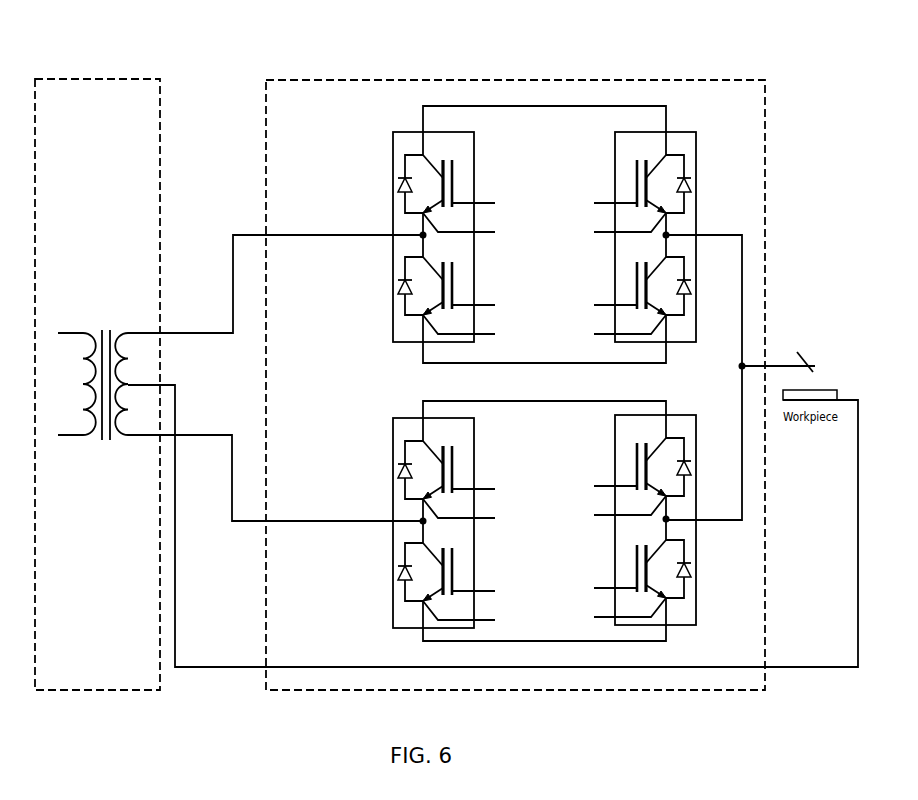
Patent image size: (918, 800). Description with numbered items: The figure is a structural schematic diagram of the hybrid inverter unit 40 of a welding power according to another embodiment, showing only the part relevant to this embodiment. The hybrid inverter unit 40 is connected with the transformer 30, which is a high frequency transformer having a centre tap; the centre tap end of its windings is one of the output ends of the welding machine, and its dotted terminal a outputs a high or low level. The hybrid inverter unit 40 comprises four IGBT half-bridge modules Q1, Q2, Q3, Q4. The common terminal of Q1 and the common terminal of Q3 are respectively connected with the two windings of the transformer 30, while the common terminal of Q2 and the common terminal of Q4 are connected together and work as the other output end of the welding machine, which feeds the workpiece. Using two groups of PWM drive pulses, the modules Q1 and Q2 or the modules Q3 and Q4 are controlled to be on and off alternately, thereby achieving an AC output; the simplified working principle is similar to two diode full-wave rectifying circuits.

The transformer 30 is at (229, 354).
The hybrid inverter unit 40 is at (515, 354).
The dotted terminal a is at (273, 284).
The IGBT half-bridge module Q1 is at (450, 237).
The IGBT half-bridge module Q2 is at (641, 237).
The IGBT half-bridge module Q3 is at (451, 523).
The IGBT half-bridge module Q4 is at (641, 520).